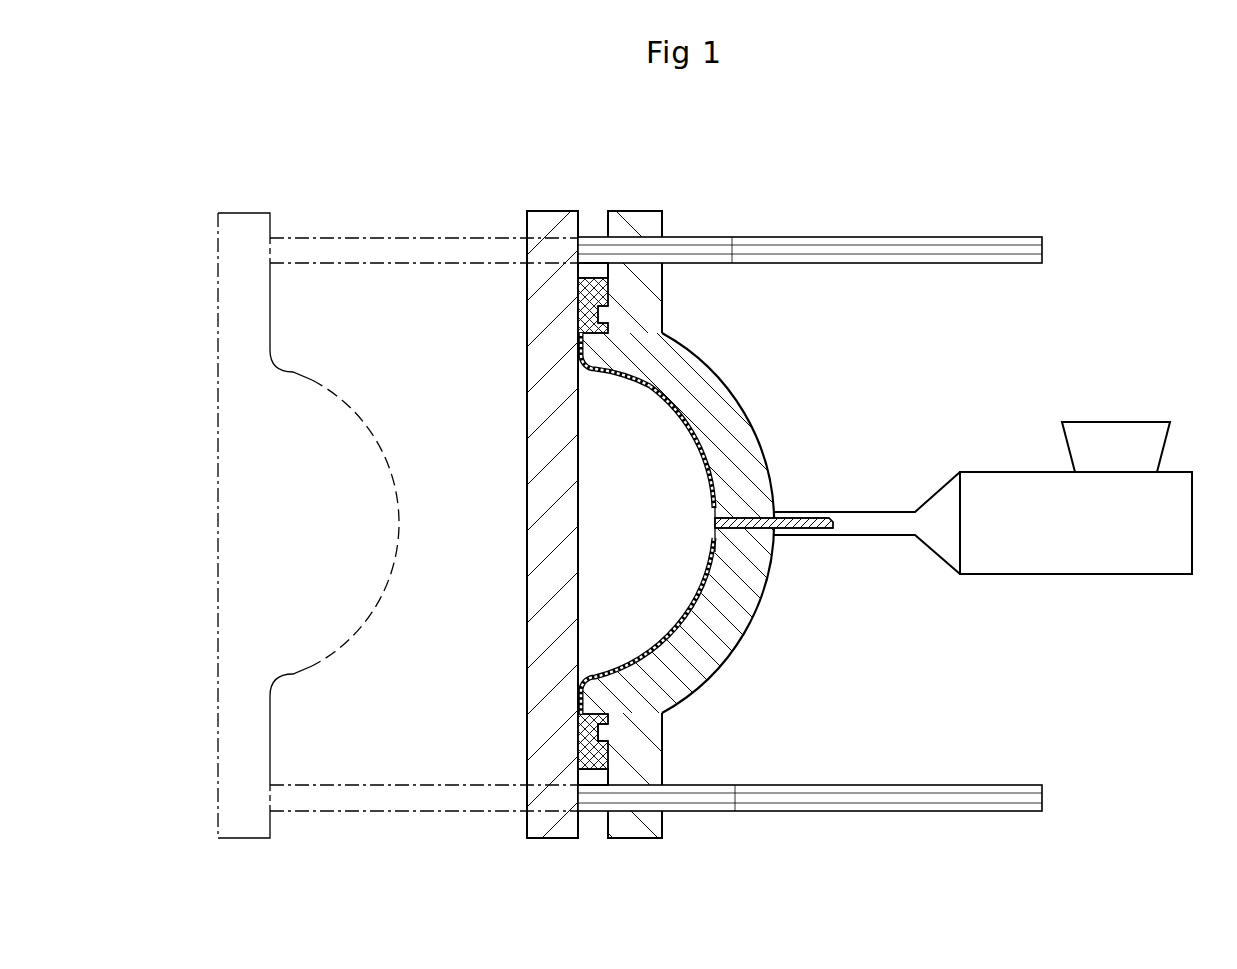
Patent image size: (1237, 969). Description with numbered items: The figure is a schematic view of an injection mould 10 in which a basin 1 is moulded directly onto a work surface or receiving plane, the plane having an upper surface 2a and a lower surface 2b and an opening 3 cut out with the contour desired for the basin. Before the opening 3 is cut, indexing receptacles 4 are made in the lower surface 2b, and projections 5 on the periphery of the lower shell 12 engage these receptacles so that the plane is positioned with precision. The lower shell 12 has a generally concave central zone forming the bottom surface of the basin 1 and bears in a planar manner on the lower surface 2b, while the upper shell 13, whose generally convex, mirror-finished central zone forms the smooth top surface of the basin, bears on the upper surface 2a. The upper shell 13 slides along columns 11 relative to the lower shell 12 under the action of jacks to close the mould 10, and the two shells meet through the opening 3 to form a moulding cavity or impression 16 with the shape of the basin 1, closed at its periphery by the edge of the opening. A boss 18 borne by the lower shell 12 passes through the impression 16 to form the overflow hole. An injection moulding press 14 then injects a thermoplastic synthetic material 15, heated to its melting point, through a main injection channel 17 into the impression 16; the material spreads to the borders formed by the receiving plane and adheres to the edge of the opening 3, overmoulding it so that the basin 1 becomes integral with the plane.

The basin 1 is at (705, 425).
The upper surface of the receiving plane 2a is at (572, 750).
The lower surface of the receiving plane 2b is at (618, 753).
The opening 3 is at (605, 732).
The indexing receptacles 4 is at (614, 757).
The projections 5 is at (607, 310).
The injection mould 10 is at (690, 215).
The columns 11 is at (829, 250).
The lower shell 12 is at (750, 467).
The upper shell 13 is at (293, 417).
The injection moulding press 14 is at (1076, 498).
The thermoplastic synthetic material 15 is at (827, 535).
The moulding cavity or impression 16 is at (714, 570).
The main injection channel 17 is at (762, 529).
The boss 18 is at (623, 372).